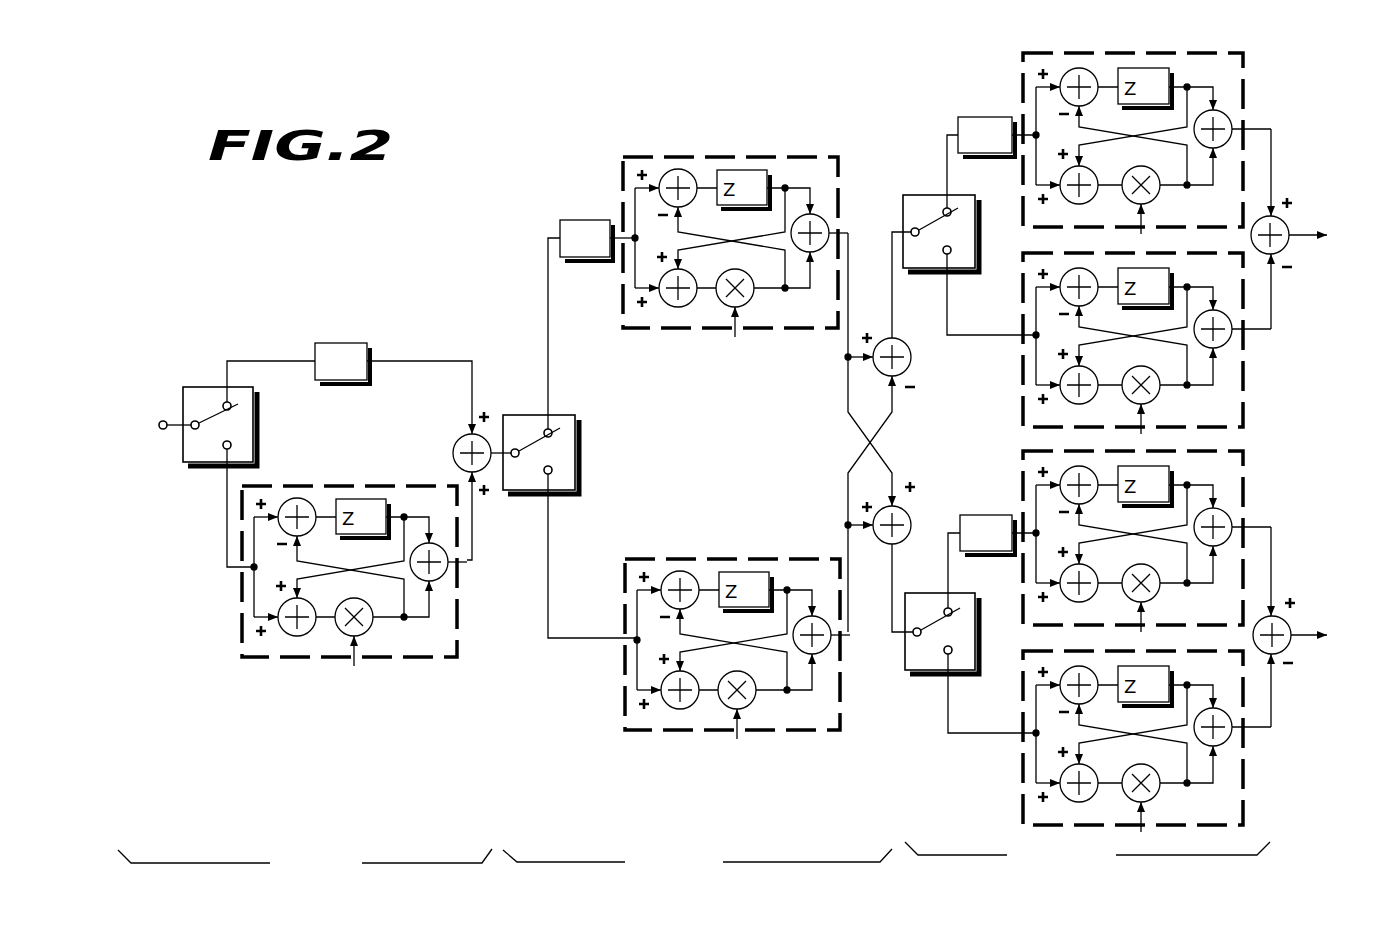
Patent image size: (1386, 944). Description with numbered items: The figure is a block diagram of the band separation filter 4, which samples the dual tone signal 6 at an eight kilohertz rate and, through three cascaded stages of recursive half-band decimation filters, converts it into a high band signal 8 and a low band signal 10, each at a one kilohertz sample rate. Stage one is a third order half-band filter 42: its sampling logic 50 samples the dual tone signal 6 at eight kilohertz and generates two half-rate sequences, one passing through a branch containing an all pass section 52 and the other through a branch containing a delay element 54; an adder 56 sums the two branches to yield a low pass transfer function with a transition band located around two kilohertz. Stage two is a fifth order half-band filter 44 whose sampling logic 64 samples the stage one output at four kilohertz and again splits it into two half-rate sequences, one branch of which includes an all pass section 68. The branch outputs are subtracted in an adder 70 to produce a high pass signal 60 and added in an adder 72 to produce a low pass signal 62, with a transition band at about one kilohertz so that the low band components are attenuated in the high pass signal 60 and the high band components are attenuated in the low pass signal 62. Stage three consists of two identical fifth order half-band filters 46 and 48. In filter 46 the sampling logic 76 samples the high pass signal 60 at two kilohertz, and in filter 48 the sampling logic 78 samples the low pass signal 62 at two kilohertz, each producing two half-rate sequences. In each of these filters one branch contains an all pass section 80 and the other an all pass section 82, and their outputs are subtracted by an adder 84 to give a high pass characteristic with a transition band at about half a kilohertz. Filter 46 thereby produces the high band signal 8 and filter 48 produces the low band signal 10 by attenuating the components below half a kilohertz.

The band separation filter 4 is at (465, 242).
The dual tone signal 6 is at (146, 404).
The high band signal 8 is at (1331, 186).
The low band signal 10 is at (1334, 590).
The third order half-band filter 42 is at (227, 590).
The fifth order half-band filter 44 is at (605, 692).
The fifth order half-band filter 46 is at (1283, 113).
The fifth order half-band filter 48 is at (1285, 512).
The sampling logic 50 is at (256, 428).
The all pass section 52 is at (458, 600).
The delay element 54 is at (341, 342).
The adder 56 is at (453, 453).
The high pass signal 60 is at (888, 250).
The low pass signal 62 is at (888, 625).
The sampling logic 64 is at (576, 453).
The all pass section 68 is at (735, 157).
The adder 70 is at (911, 357).
The adder 72 is at (910, 521).
The sampling logic 76 is at (973, 275).
The sampling logic 78 is at (976, 633).
The all pass section 80 is at (1243, 357).
The all pass section 82 is at (1242, 77).
The adder 84 is at (1292, 238).